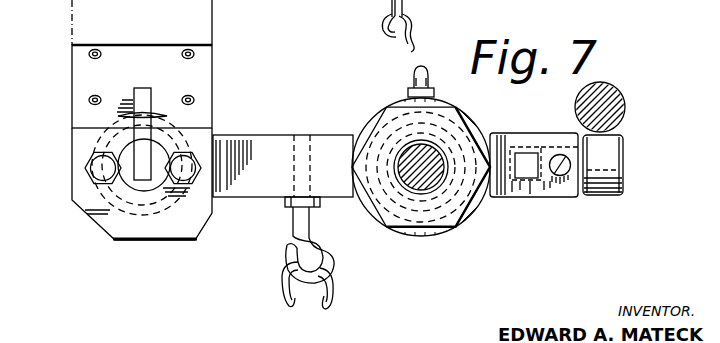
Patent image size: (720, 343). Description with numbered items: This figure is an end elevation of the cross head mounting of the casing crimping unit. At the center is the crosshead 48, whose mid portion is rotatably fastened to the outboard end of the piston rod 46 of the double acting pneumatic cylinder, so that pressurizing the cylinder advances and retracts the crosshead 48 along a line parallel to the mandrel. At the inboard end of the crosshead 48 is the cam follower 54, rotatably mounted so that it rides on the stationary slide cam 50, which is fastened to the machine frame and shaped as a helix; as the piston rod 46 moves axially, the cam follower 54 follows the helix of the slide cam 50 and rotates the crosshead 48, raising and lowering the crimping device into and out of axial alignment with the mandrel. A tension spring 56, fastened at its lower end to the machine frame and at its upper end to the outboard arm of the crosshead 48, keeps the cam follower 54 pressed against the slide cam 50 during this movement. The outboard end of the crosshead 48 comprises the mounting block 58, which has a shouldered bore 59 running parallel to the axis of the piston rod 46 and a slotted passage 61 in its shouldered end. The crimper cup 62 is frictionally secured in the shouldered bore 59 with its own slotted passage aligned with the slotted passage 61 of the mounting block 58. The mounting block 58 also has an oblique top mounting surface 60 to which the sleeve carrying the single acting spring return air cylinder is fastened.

The piston rod 46 is at (442, 173).
The crosshead 48 is at (333, 135).
The slide cam 50 is at (624, 120).
The cam follower 54 is at (624, 170).
The tension spring 56 is at (282, 287).
The mounting block 58 is at (73, 182).
The shouldered bore 59 is at (317, 10).
The oblique top mounting surface 60 is at (90, 82).
The slotted passage 61 is at (145, 139).
The crimper cup 62 is at (112, 222).